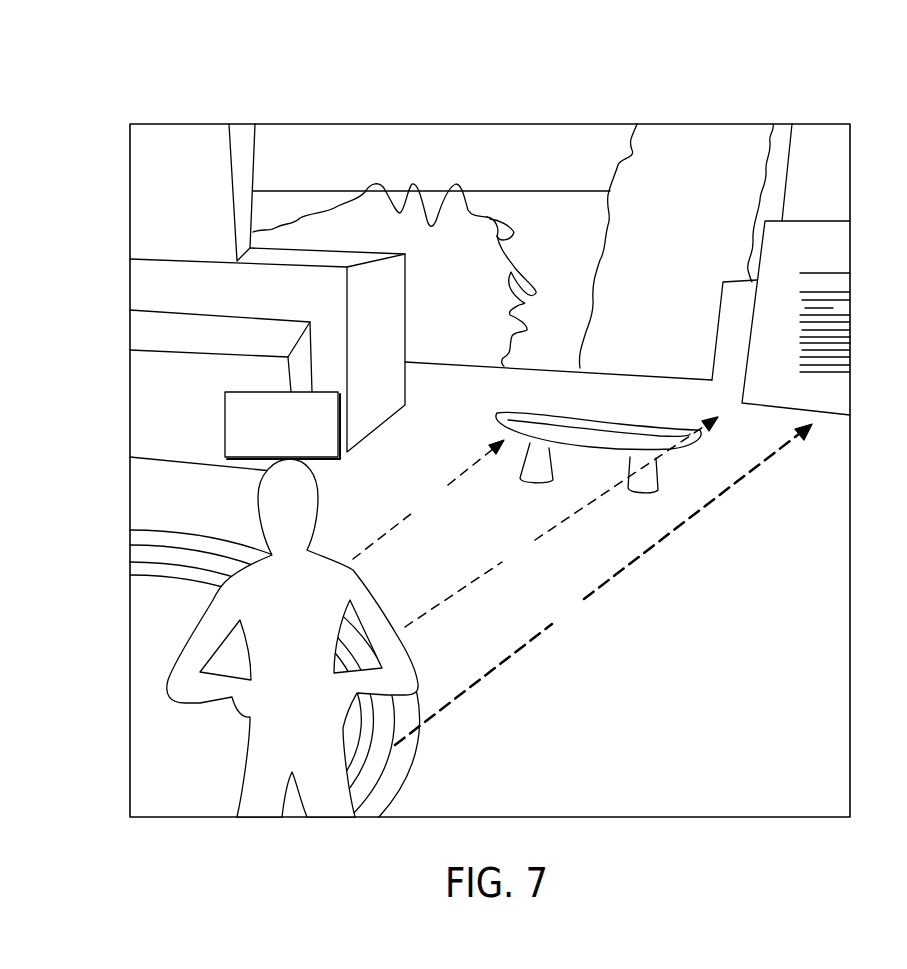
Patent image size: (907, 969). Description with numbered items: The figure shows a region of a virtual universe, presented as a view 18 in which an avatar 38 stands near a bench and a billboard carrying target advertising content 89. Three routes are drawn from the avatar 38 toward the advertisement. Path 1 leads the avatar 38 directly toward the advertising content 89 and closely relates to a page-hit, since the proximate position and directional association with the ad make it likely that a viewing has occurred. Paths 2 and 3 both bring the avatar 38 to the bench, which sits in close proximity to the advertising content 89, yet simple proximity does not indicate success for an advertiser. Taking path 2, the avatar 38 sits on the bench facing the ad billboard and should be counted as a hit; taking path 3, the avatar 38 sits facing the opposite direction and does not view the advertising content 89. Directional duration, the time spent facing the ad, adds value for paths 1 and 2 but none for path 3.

The display screen view 18 is at (712, 121).
The avatar 38 is at (205, 628).
The target advertising content 89 is at (825, 252).
The path 1 is at (603, 584).
The path 2 is at (561, 522).
The path 3 is at (428, 499).